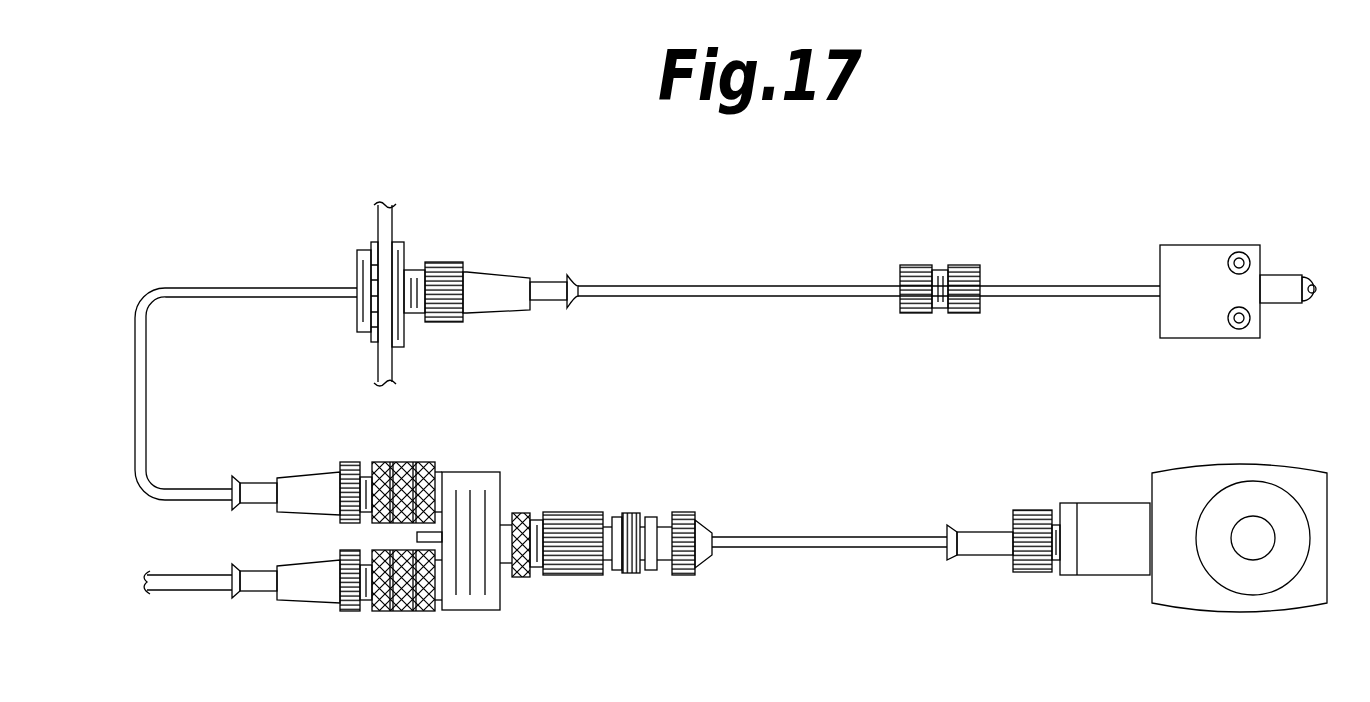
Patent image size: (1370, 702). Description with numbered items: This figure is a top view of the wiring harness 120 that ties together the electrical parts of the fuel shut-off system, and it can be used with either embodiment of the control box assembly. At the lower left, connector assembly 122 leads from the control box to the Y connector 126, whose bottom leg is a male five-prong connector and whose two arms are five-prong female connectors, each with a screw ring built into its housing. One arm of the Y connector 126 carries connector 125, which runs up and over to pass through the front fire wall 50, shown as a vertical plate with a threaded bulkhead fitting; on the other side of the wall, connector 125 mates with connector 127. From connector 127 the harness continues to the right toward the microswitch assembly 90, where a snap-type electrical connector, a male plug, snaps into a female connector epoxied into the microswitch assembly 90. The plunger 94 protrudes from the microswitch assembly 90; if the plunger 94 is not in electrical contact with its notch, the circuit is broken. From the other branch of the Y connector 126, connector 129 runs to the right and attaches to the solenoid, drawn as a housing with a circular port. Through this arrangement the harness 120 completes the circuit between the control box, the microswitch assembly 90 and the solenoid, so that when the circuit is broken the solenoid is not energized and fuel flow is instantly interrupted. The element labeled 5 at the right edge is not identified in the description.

The front fire wall 50 is at (393, 218).
The microswitch assembly 90 is at (1220, 243).
The plunger 94 is at (1308, 277).
The wiring harness 120 is at (726, 262).
The connector assembly 122 is at (193, 592).
The connector 125 is at (200, 287).
The Y connector 126 is at (462, 470).
The connector 127 is at (505, 270).
The connector 129 is at (1028, 510).
The sensor housing 5 is at (1322, 465).